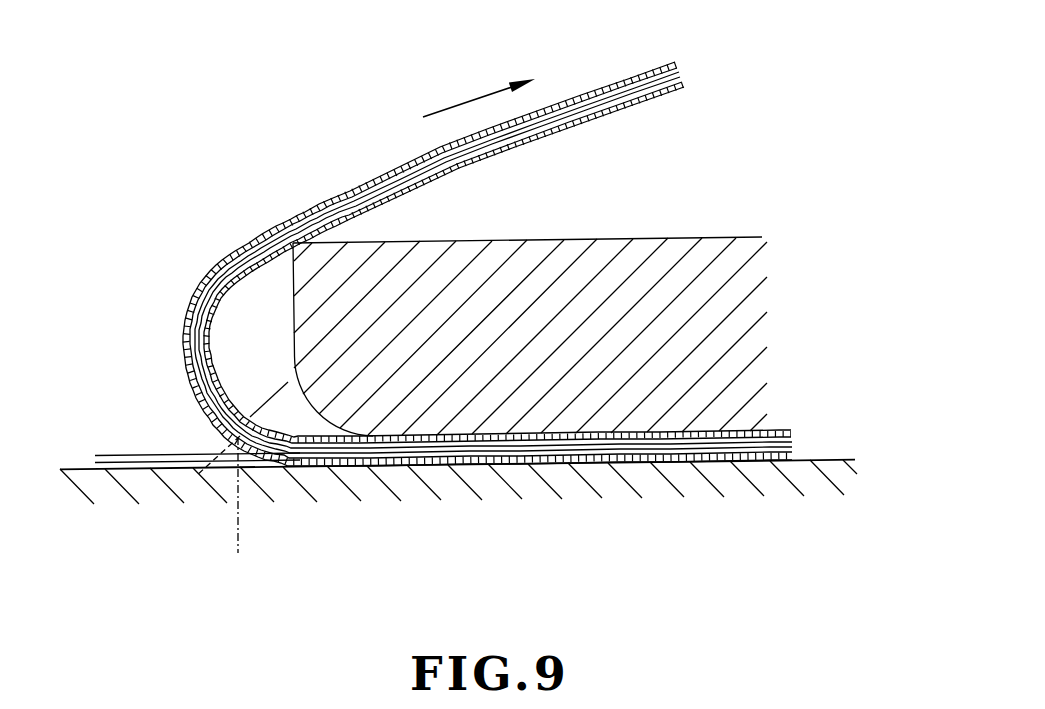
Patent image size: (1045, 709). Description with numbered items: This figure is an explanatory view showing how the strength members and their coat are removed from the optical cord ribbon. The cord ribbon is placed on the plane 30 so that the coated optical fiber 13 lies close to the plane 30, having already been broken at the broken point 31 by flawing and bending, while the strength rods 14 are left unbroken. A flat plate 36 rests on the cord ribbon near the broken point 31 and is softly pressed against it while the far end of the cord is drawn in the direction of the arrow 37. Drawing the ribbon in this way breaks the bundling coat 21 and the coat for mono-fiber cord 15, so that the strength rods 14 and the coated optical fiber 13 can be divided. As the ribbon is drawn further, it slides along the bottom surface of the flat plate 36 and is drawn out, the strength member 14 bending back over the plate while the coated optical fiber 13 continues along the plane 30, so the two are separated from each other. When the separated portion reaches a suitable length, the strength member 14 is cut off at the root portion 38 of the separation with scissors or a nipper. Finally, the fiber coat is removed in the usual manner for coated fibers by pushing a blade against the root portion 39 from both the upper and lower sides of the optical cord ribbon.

The coated optical fiber 13 is at (133, 451).
The strength rods 14 is at (331, 199).
The coat for mono-fiber cord 15 is at (652, 72).
The bundling coat 21 is at (598, 92).
The plane 30 is at (457, 490).
The broken point 31 is at (451, 151).
The flat plate 36 is at (656, 255).
The arrow 37 is at (450, 105).
The root portion of the separation 38 is at (270, 404).
The root portion 39 is at (238, 540).